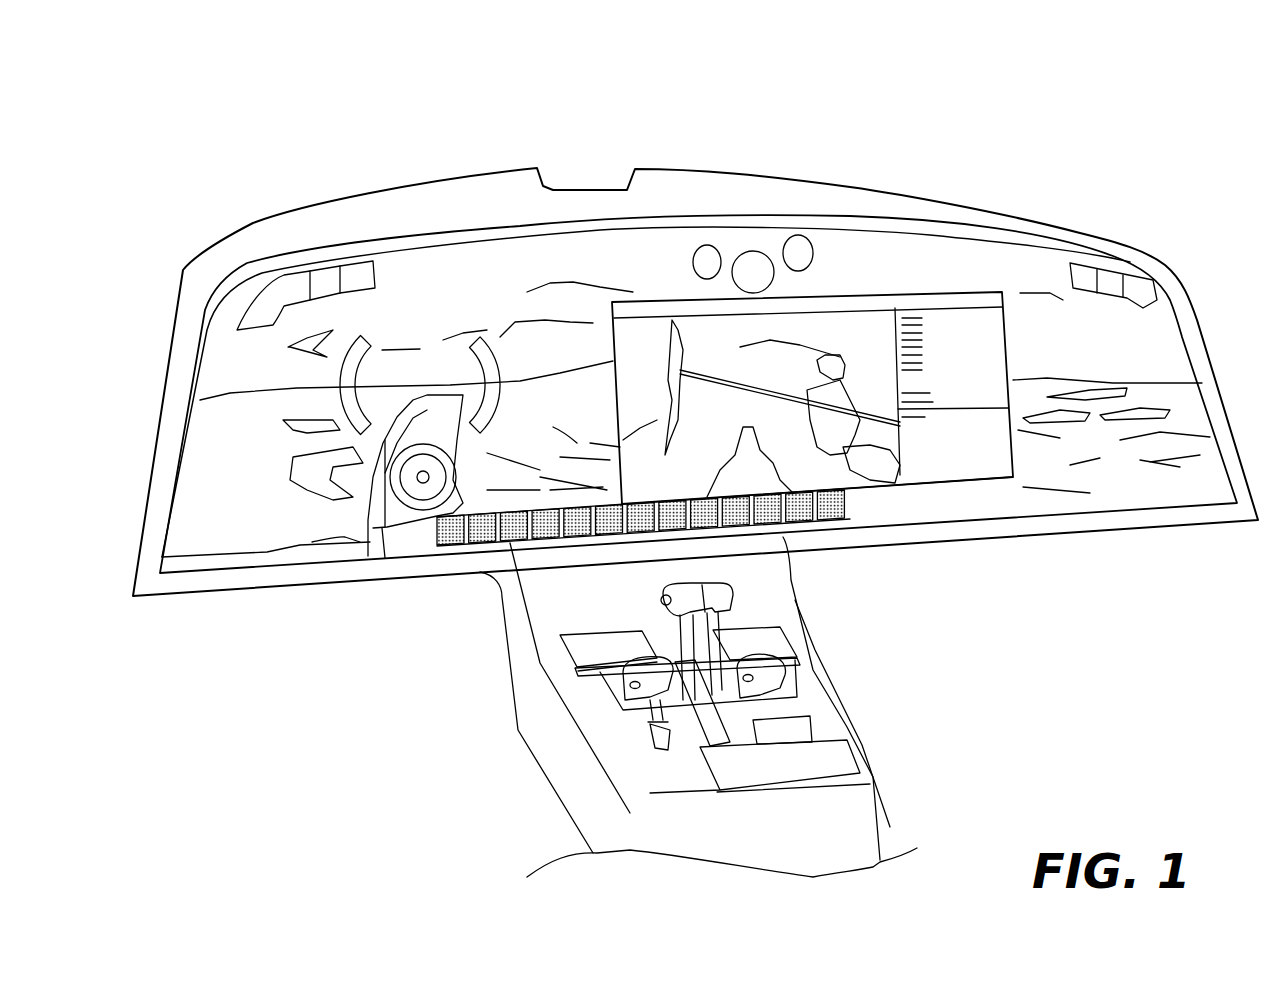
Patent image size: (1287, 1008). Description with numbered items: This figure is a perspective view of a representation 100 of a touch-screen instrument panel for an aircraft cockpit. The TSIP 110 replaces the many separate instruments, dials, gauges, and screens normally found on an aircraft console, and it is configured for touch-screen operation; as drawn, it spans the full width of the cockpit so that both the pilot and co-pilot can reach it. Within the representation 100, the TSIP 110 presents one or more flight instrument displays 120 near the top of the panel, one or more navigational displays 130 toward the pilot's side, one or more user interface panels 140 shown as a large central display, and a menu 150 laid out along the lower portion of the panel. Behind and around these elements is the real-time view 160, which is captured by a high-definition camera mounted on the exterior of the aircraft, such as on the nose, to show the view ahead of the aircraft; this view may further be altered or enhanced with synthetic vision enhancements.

The representation 100 is at (1050, 97).
The TSIP 110 is at (1197, 353).
The flight instrument displays 120 is at (741, 255).
The navigational displays 130 is at (337, 392).
The user interface panels 140 is at (990, 482).
The menu 150 is at (735, 548).
The real-time view 160 is at (1157, 462).